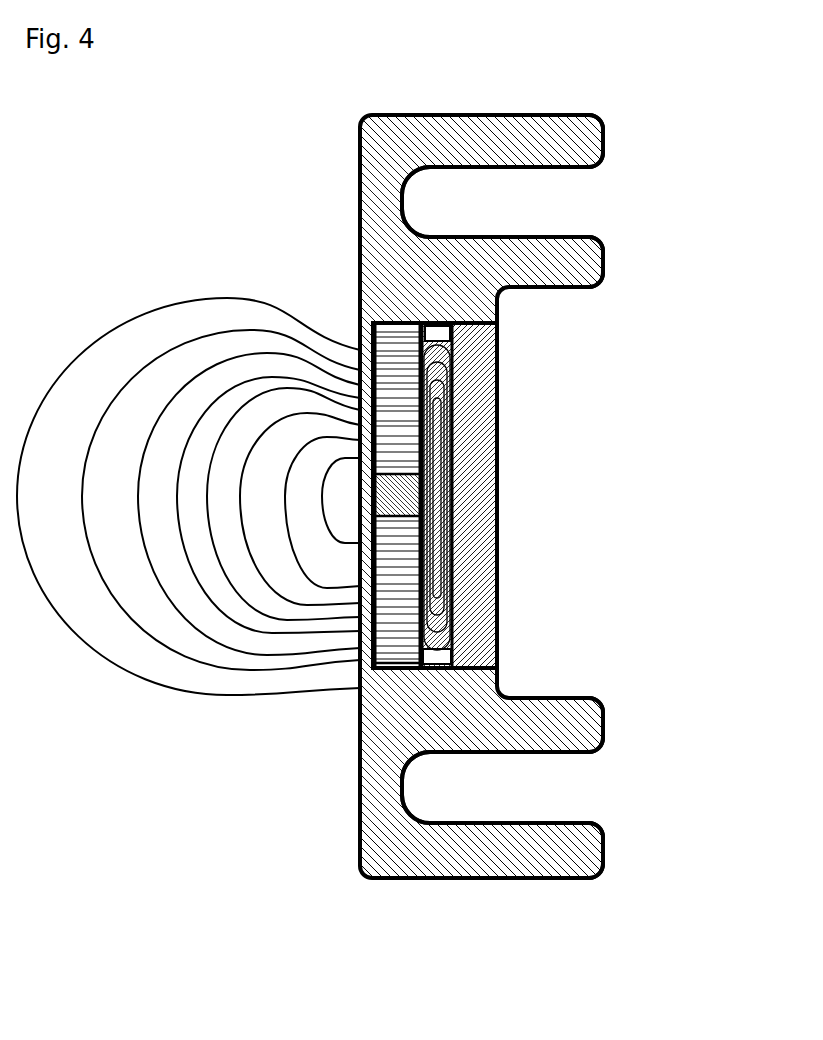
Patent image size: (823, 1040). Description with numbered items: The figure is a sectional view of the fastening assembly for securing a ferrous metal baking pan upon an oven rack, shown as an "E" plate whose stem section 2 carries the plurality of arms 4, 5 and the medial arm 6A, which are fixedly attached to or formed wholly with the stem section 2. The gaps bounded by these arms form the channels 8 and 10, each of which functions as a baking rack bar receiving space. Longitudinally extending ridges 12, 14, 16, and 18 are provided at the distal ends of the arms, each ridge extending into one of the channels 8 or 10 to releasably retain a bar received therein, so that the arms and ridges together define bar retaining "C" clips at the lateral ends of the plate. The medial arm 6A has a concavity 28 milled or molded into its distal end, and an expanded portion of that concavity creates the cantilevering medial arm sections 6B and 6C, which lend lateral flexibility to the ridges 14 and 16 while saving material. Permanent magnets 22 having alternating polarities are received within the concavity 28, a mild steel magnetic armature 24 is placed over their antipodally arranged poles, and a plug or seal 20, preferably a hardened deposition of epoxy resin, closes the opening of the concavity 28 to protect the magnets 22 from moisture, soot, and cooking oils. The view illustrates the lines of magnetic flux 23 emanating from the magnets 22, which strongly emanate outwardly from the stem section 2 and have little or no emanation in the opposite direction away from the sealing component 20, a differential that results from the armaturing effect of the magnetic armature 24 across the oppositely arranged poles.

The stem section 2 is at (373, 202).
The arm 4 is at (488, 137).
The arm 5 is at (507, 857).
The medial arm 6A is at (465, 312).
The cantilevering medial arm section 6B is at (560, 267).
The cantilevering medial arm section 6C is at (557, 717).
The channel 8 is at (445, 200).
The channel 10 is at (468, 785).
The longitudinally extending ridge 12 is at (583, 175).
The longitudinally extending ridge 14 is at (580, 230).
The longitudinally extending ridge 16 is at (583, 758).
The longitudinally extending ridge 18 is at (577, 815).
The plug or seal 20 is at (475, 405).
The permanent magnet 22 is at (400, 352).
The magnetic field lines 23 is at (173, 345).
The magnetic armature 24 is at (453, 638).
The concavity 28 is at (442, 335).